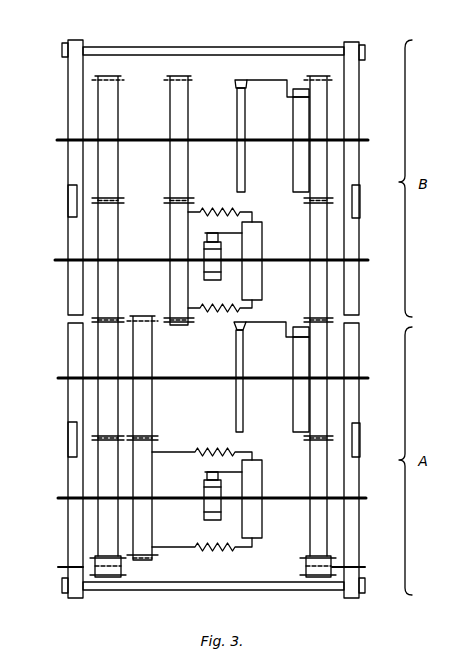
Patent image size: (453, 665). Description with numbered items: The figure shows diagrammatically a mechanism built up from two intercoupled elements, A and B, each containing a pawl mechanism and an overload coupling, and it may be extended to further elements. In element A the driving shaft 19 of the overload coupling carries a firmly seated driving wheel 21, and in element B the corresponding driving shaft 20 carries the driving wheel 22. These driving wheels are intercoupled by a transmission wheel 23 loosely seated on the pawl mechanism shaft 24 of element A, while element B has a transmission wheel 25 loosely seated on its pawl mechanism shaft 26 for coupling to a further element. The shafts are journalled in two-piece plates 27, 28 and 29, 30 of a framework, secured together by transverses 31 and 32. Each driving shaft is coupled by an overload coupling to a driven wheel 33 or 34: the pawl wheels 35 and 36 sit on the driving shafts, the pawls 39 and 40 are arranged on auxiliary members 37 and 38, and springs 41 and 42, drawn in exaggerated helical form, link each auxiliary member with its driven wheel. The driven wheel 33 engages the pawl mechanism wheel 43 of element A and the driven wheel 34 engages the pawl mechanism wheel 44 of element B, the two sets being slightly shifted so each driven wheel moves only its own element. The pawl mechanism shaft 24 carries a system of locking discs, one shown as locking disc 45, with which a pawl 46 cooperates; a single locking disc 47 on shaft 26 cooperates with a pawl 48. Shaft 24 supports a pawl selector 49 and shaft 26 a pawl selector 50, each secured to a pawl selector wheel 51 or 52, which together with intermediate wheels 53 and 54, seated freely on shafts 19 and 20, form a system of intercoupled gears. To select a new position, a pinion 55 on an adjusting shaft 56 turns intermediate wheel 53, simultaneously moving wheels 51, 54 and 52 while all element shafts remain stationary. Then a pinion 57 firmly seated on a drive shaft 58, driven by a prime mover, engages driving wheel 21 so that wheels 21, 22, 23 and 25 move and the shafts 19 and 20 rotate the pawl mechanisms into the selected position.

The driving shaft 19 is at (90, 505).
The driving shaft 20 is at (90, 265).
The driving wheel 21 is at (98, 468).
The driving wheel 22 is at (100, 238).
The transmission wheel 23 is at (98, 400).
The pawl mechanism shaft 24 is at (126, 381).
The transmission wheel 25 is at (98, 163).
The pawl mechanism shaft 26 is at (135, 140).
The plate 27 is at (68, 521).
The plate 28 is at (360, 362).
The plate 29 is at (70, 226).
The plate 30 is at (360, 110).
The transverse 31 is at (103, 47).
The transverse 32 is at (163, 590).
The driven wheel 33 is at (143, 563).
The driven wheel 34 is at (168, 277).
The pawl wheel 35 is at (203, 514).
The pawl wheel 36 is at (208, 285).
The auxiliary member 37 is at (258, 531).
The auxiliary member 38 is at (256, 222).
The pawl 39 is at (212, 473).
The pawl 40 is at (235, 234).
The spring 41 is at (208, 450).
The spring 42 is at (210, 211).
The pawl mechanism wheel 43 is at (153, 362).
The pawl mechanism wheel 44 is at (170, 100).
The locking disc 45 is at (236, 358).
The pawl 46 is at (268, 321).
The locking disc 47 is at (237, 107).
The pawl 48 is at (252, 79).
The pawl selector 49 is at (293, 401).
The pawl selector 50 is at (297, 85).
The pawl selector wheel 51 is at (318, 414).
The pawl selector wheel 52 is at (318, 77).
The intermediate wheel 53 is at (308, 533).
The intermediate wheel 54 is at (329, 292).
The pinion 55 is at (320, 578).
The adjusting shaft 56 is at (362, 567).
The pinion 57 is at (108, 580).
The drive shaft 58 is at (62, 567).